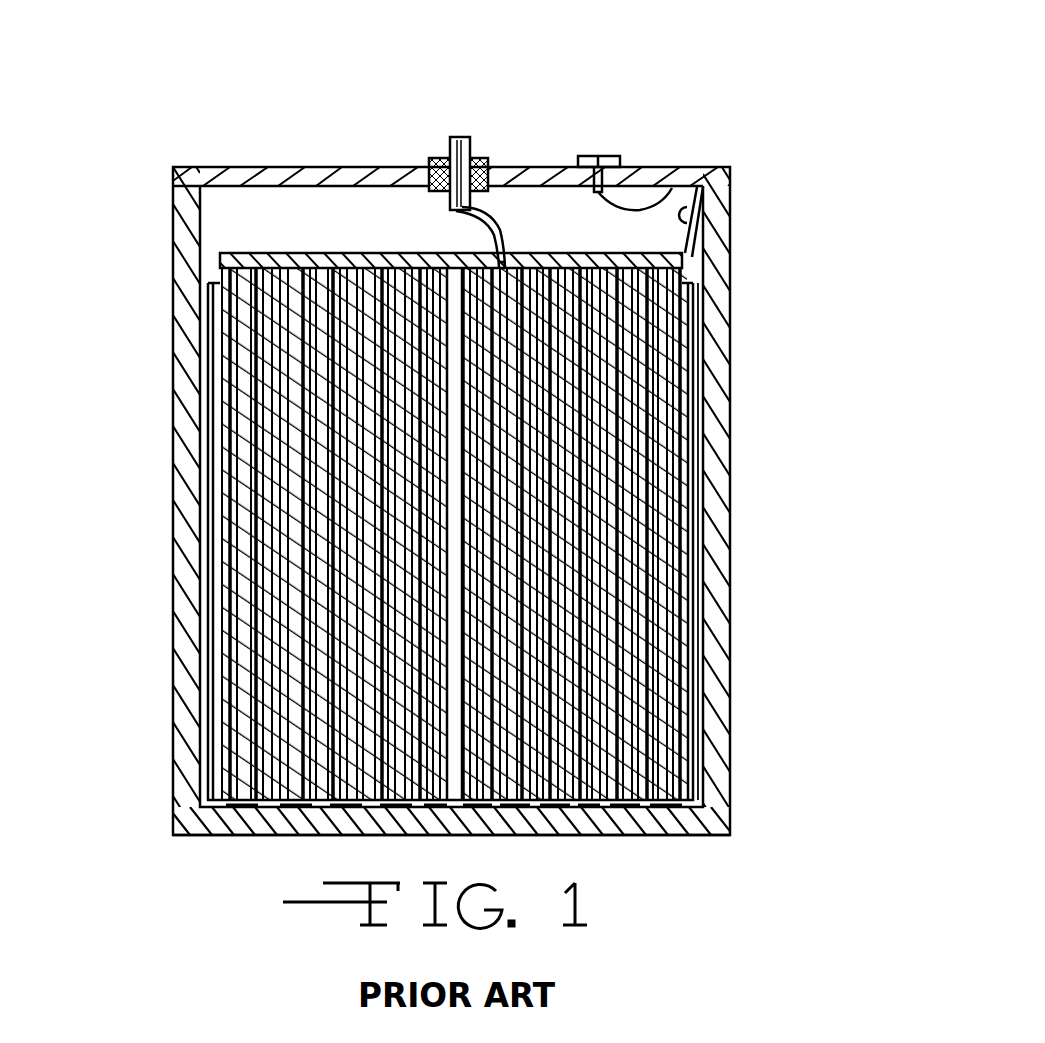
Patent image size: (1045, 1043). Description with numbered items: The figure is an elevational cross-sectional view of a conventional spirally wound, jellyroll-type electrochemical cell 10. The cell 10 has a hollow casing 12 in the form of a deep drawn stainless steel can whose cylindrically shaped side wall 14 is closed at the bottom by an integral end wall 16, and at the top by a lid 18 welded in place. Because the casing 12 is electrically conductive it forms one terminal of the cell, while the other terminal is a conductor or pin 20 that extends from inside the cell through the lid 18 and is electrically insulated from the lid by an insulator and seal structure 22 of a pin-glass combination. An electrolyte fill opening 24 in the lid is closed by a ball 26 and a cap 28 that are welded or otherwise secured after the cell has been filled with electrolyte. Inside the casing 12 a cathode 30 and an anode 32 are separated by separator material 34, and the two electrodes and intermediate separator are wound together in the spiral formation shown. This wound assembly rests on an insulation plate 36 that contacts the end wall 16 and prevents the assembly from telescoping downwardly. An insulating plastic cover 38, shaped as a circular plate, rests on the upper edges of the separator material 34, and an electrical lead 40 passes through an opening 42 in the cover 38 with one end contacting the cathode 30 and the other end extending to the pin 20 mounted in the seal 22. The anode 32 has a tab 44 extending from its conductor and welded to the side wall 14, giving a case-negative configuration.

The electrochemical cell 10 is at (789, 136).
The casing 12 is at (733, 333).
The side wall 14 is at (737, 424).
The end wall 16 is at (223, 835).
The lid 18 is at (298, 167).
The pin 20 is at (470, 140).
The insulator and seal structure 22 is at (440, 158).
The electrolyte fill opening 24 is at (672, 180).
The ball 26 is at (597, 157).
The cap 28 is at (616, 157).
The cathode 30 is at (605, 554).
The anode 32 is at (695, 641).
The separator material 34 is at (650, 748).
The insulation plate 36 is at (680, 836).
The insulating plastic cover 38 is at (258, 254).
The electrical lead 40 is at (480, 232).
The opening 42 is at (507, 258).
The tab 44 is at (700, 200).